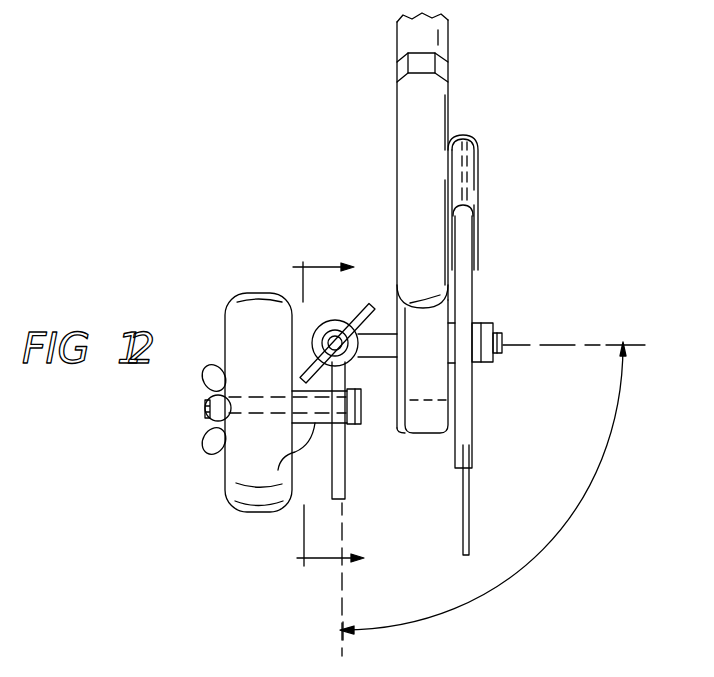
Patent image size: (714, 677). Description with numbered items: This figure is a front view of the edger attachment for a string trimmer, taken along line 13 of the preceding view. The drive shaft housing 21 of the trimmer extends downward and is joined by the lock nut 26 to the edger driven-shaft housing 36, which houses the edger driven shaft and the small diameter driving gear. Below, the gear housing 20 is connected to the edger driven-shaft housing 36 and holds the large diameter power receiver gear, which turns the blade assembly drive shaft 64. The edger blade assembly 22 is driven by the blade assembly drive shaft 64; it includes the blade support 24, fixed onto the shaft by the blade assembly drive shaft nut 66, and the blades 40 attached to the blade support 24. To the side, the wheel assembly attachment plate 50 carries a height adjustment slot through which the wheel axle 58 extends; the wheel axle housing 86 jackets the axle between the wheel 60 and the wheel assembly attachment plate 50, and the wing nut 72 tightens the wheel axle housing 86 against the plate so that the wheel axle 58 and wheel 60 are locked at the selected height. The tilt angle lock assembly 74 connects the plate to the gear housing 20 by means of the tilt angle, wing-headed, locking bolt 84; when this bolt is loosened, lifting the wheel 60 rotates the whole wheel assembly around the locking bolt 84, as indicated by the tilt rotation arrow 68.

The drive shaft housing 21 is at (436, 37).
The lock nut 26 is at (446, 75).
The edger driven-shaft housing 36 is at (410, 117).
The gear housing 20 is at (434, 424).
The edger blade assembly 22 is at (484, 300).
The blade support 24 is at (474, 402).
The blades 40 is at (469, 502).
The blade assembly drive shaft nut 66 is at (484, 325).
The blade assembly drive shaft 64 is at (502, 343).
The tilt angle, wing-headed, locking bolt 84 is at (373, 305).
The tilt angle lock assembly 74 is at (364, 282).
The wheel assembly attachment plate 50 is at (345, 487).
The wheel axle 58 is at (205, 410).
The wing nut 72 is at (208, 364).
The wheel 60 is at (225, 505).
The wheel axle housing 86 is at (282, 472).
The tilt rotation arrow 68 is at (578, 500).
The section line 13 is at (316, 411).